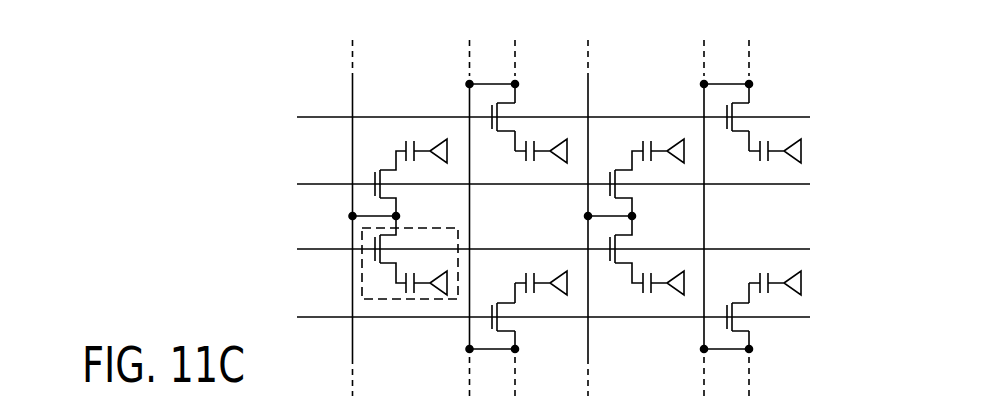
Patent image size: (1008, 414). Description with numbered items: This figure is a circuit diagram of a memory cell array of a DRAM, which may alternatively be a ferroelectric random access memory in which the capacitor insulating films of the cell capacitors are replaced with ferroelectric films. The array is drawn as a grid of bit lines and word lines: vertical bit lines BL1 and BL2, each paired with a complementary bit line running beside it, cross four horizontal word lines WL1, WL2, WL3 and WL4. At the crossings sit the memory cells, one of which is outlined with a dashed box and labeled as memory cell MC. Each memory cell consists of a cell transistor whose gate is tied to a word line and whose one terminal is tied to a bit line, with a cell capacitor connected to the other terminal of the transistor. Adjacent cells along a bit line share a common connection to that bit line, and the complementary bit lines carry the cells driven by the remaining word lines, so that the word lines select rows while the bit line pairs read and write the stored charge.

The memory cell MC is at (410, 250).
The bit line BL1 is at (354, 199).
The bit line BL2 is at (589, 199).
The word line WL1 is at (526, 118).
The word line WL2 is at (526, 184).
The word line WL3 is at (526, 249).
The word line WL4 is at (526, 316).